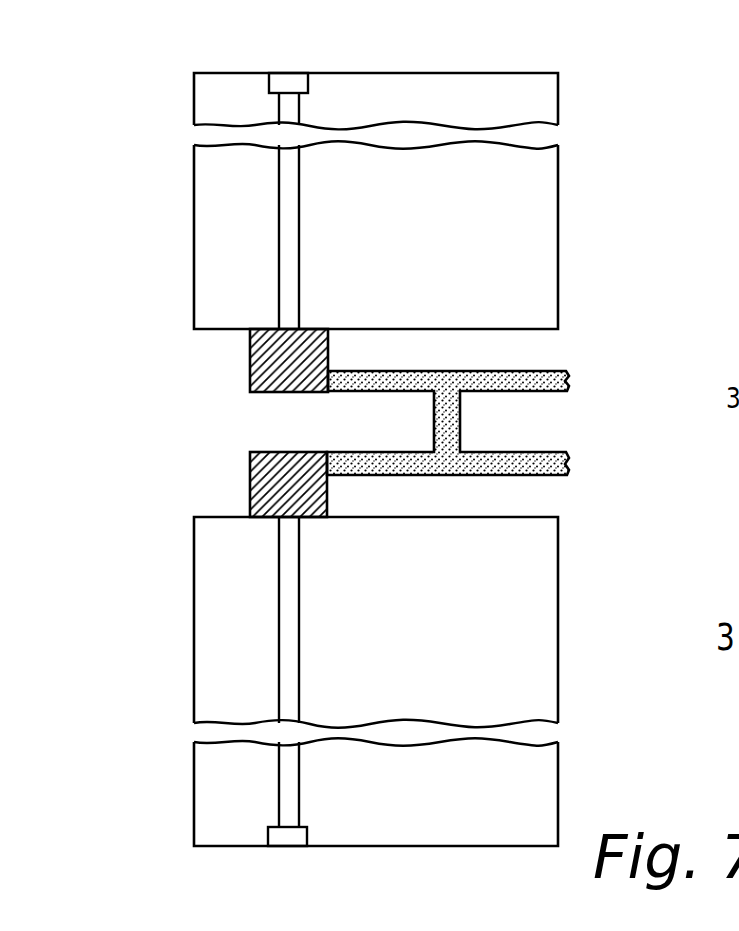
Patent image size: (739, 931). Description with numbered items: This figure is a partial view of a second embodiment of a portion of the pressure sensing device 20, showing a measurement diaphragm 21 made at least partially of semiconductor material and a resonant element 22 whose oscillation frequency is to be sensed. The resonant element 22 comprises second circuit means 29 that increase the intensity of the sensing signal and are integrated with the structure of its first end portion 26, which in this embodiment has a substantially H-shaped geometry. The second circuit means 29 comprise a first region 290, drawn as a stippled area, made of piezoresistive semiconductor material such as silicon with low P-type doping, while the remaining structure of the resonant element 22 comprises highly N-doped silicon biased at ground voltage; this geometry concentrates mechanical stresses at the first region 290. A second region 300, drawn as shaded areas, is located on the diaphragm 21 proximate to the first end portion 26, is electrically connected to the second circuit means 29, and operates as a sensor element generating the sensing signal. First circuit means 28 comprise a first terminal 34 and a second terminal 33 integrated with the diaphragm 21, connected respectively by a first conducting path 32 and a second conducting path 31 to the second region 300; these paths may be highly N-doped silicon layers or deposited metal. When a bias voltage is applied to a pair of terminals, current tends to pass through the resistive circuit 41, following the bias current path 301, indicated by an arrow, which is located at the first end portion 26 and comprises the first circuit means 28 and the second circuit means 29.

The pressure sensing device 20 is at (420, 428).
The measurement diaphragm 21 is at (545, 100).
The resonant element 22 is at (490, 412).
The first end portion 26 is at (476, 355).
The first circuit means 28 is at (207, 438).
The second circuit means 29 is at (483, 448).
The first region 290 is at (474, 454).
The second region 300 is at (327, 378).
The bias current path 301 is at (287, 573).
The second conducting path 31 is at (337, 681).
The first conducting path 32 is at (354, 179).
The second terminal 33 is at (314, 838).
The first terminal 34 is at (314, 91).
The resistive circuit 41 is at (720, 521).